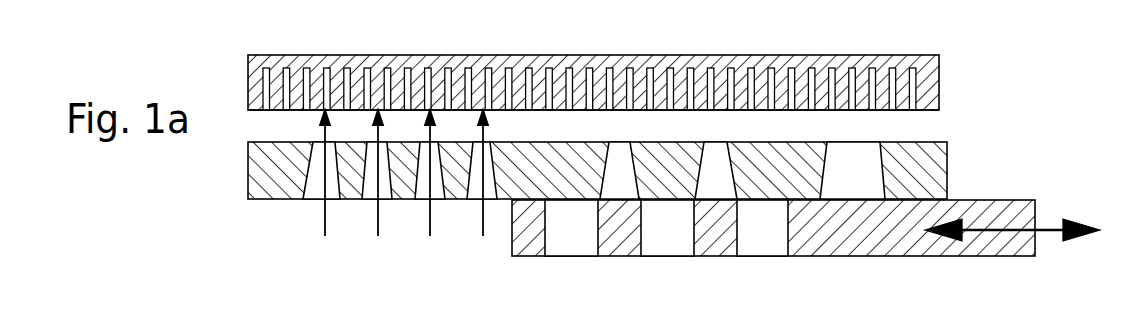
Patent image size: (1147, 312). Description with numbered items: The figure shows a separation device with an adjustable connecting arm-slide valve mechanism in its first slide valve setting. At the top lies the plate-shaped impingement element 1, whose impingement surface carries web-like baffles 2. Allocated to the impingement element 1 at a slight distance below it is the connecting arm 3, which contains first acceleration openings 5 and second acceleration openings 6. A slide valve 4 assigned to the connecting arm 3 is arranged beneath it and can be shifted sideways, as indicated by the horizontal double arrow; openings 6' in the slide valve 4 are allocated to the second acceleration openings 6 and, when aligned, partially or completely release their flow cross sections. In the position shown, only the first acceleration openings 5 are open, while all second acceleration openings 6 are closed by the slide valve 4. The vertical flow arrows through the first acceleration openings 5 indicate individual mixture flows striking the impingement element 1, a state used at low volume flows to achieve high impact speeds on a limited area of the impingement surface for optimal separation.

The impingement element 1 is at (955, 73).
The baffles 2 is at (877, 112).
The connecting arm 3 is at (626, 103).
The slide valve 4 is at (806, 249).
The first acceleration openings 5 is at (317, 185).
The second acceleration openings 6 is at (852, 103).
The slide valve openings 6' is at (774, 249).